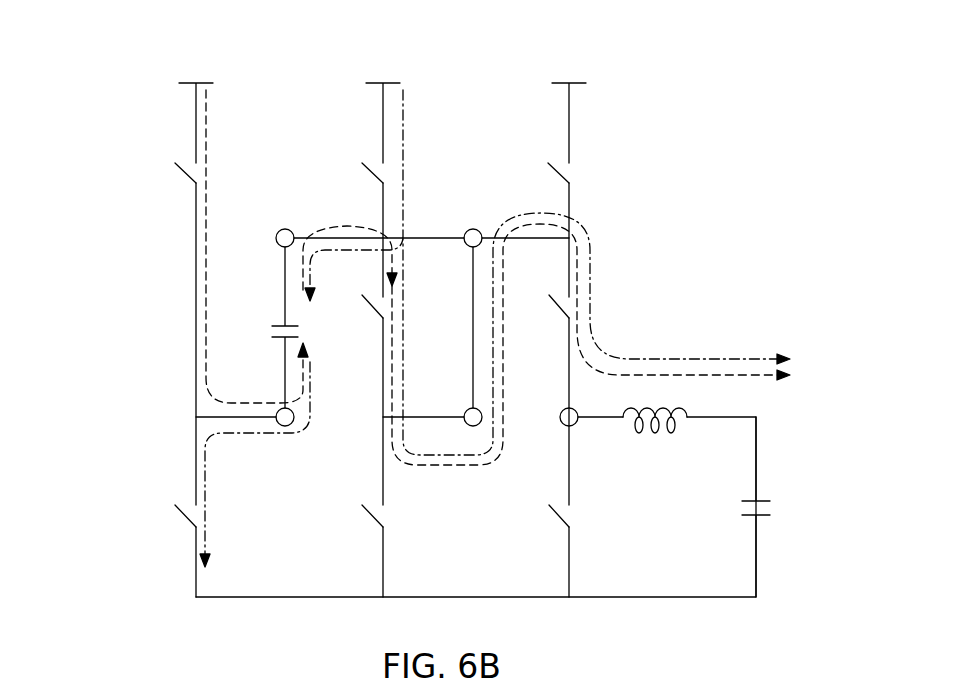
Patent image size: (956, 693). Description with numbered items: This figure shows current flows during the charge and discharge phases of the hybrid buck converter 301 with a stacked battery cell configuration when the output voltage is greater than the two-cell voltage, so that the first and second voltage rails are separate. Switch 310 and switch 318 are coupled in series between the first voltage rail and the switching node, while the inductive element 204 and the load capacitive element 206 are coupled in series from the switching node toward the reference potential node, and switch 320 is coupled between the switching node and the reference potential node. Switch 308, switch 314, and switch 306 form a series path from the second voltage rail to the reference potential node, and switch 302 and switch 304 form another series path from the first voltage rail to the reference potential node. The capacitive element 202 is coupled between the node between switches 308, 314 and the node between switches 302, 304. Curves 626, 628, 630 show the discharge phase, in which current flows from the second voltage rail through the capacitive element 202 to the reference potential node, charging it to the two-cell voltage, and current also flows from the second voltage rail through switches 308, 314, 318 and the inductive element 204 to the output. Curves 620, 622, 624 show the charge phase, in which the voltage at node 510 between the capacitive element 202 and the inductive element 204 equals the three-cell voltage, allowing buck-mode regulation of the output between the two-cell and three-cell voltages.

The hybrid buck converter 301 is at (127, 29).
The switch 302 is at (194, 184).
The switch 304 is at (184, 515).
The switch 306 is at (372, 515).
The switch 308 is at (381, 184).
The switch 310 is at (560, 180).
The switch 314 is at (372, 306).
The switch 318 is at (555, 301).
The switch 320 is at (558, 515).
The capacitive element 202 is at (278, 343).
The inductive element 204 is at (678, 407).
The load capacitive element 206 is at (758, 500).
The node 510 is at (471, 228).
The curve 620 is at (208, 134).
The curve 622 is at (300, 278).
The curve 624 is at (655, 375).
The curve 626 is at (406, 140).
The curve 628 is at (207, 487).
The curve 630 is at (731, 358).